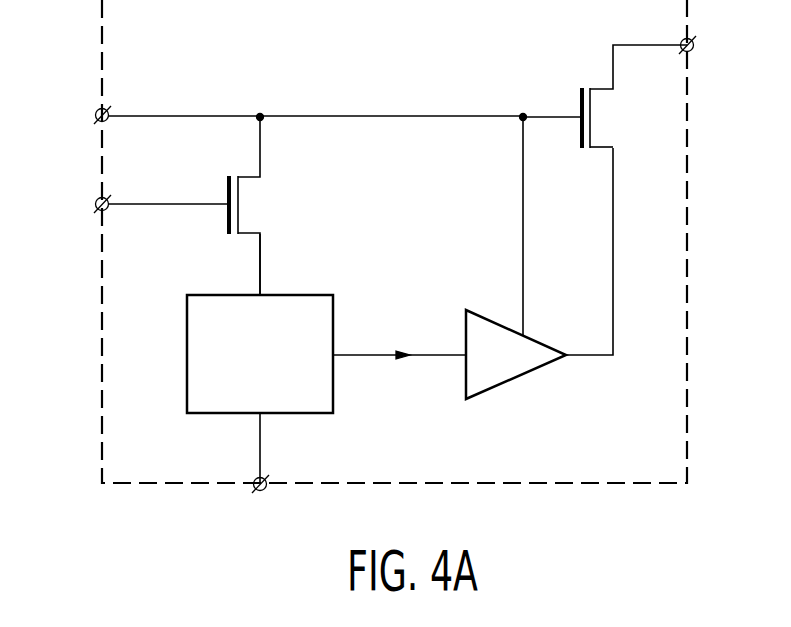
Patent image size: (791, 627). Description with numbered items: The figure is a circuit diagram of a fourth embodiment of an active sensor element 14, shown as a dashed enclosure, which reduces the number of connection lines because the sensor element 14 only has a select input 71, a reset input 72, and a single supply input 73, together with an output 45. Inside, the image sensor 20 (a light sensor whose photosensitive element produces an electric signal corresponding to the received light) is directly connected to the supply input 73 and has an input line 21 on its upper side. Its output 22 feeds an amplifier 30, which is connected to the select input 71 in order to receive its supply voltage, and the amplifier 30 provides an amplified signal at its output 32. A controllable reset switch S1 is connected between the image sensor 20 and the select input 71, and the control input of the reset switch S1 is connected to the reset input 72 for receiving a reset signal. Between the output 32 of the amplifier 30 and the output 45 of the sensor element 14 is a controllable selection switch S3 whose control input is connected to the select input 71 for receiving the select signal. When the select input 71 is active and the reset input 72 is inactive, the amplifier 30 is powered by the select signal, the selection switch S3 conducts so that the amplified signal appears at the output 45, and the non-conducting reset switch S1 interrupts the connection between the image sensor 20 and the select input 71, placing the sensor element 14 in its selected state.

The sensor element 14 is at (100, 25).
The select input 71 is at (95, 114).
The reset input 72 is at (95, 203).
The controllable reset switch S1 is at (254, 198).
The image sensor 20 is at (270, 369).
The input line of control circuit 21 is at (263, 293).
The output of the light sensor 22 is at (333, 350).
The amplifier 30 is at (507, 369).
The output of the amplifier 32 is at (566, 352).
The controllable selection switch S3 is at (605, 121).
The output of the sensor element 45 is at (695, 48).
The supply input 73 is at (266, 491).